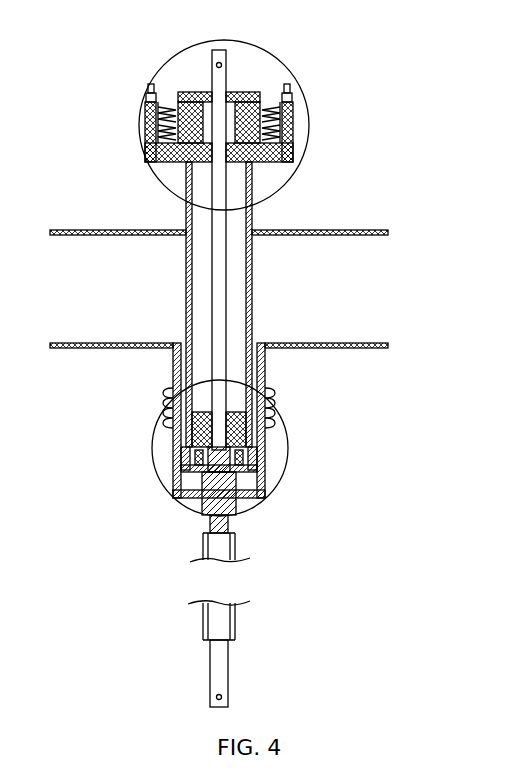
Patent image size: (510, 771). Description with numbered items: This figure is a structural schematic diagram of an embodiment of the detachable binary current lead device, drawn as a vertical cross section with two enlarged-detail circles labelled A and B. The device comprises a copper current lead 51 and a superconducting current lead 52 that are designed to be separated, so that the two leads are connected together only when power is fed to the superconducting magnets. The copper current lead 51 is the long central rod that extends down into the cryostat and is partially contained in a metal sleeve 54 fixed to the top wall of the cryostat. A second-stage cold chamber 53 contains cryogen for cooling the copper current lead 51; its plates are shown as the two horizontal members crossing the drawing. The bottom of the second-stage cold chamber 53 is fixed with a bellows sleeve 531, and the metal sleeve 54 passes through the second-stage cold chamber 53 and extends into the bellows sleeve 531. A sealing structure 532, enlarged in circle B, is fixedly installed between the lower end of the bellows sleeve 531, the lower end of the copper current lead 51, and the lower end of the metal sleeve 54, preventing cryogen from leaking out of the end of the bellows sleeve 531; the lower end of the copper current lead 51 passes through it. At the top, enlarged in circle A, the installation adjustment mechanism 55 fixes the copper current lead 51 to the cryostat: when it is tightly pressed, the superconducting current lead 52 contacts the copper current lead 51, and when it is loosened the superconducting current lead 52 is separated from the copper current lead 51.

The copper current lead 51 is at (232, 257).
The superconducting current lead 52 is at (240, 638).
The second-stage cold chamber 53 is at (342, 225).
The bellows sleeve 531 is at (270, 378).
The sealing structure 532 is at (262, 437).
The metal sleeve 54 is at (258, 310).
The installation adjustment mechanism 55 is at (284, 118).
The detail region A is at (252, 79).
The detail region B is at (272, 483).